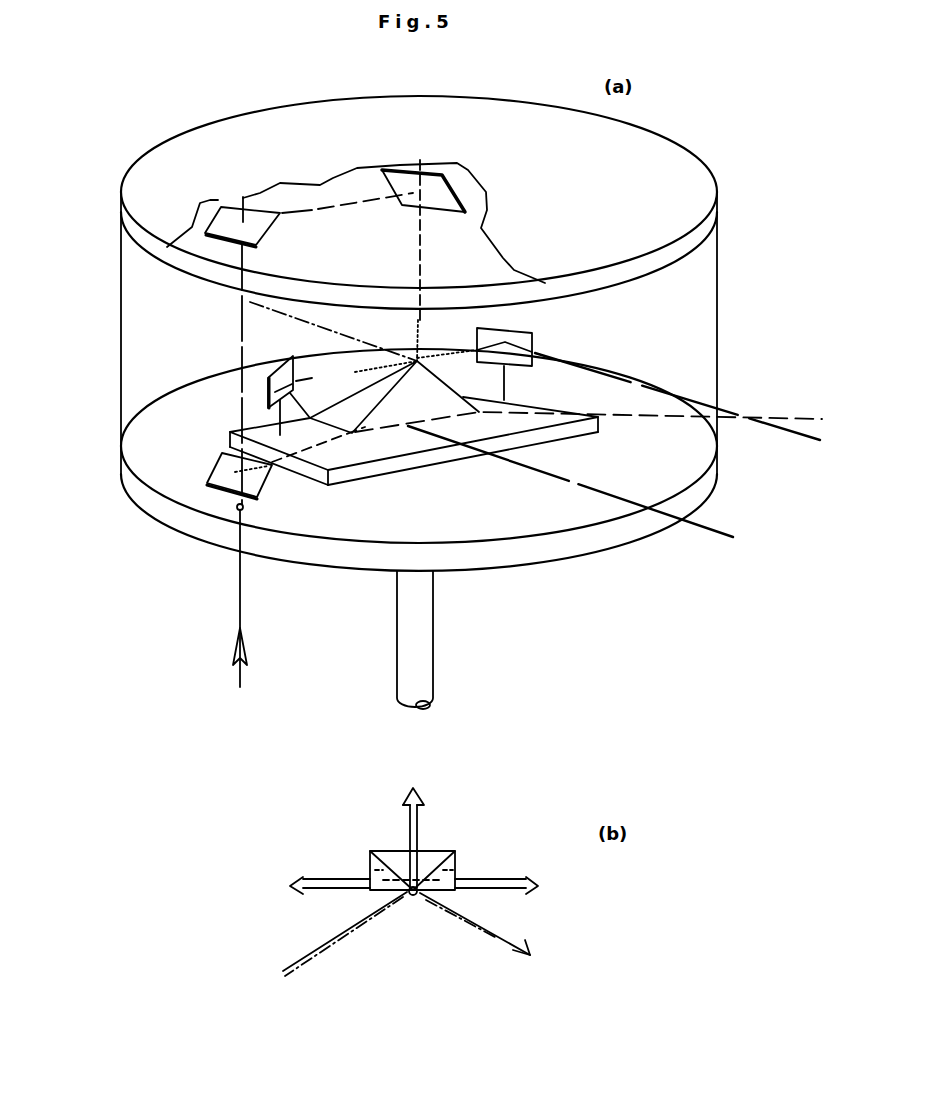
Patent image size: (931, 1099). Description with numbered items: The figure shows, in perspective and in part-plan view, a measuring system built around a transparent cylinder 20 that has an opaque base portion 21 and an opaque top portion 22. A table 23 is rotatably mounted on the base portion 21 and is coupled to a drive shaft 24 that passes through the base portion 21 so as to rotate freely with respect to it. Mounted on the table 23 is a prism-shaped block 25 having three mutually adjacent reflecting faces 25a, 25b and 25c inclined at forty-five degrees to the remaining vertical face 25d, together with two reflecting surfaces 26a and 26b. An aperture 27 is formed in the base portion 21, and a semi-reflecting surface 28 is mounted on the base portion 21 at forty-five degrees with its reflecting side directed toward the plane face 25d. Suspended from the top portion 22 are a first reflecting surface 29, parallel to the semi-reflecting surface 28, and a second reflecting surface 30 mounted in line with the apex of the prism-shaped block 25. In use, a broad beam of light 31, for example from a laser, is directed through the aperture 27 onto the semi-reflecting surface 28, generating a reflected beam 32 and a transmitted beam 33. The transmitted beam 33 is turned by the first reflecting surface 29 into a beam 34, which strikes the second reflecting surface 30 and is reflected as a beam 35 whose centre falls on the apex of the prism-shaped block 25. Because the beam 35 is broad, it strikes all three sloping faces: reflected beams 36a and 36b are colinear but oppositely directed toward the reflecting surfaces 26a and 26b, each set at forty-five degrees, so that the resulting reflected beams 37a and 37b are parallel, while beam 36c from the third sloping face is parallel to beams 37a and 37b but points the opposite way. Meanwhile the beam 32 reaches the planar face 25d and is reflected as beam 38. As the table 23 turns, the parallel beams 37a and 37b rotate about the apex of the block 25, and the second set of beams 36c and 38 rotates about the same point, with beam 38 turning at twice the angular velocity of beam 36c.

The transparent cylinder 20 is at (120, 337).
The base portion 21 is at (420, 532).
The top portion 22 is at (606, 206).
The table 23 is at (435, 460).
The drive shaft 24 is at (425, 633).
The prism-shaped block 25 is at (412, 638).
The reflecting face 25a is at (372, 394).
The reflecting face 25b is at (397, 858).
The reflecting face 25c is at (454, 870).
The vertical face 25d is at (432, 392).
The reflecting surface 26a is at (266, 380).
The reflecting surface 26b is at (534, 333).
The aperture 27 is at (236, 509).
The semi-reflecting surface 28 is at (223, 466).
The first reflecting surface 29 is at (232, 211).
The second reflecting surface 30 is at (447, 195).
The beam of light 31 is at (243, 612).
The reflected beam 32 is at (328, 440).
The transmitted beam 33 is at (240, 338).
The reflected beam 34 is at (328, 207).
The beam 35 is at (421, 268).
The reflected beam 36a is at (348, 372).
The reflected beam 36b is at (452, 348).
The beam 36c is at (300, 318).
The reflected beam 37a is at (684, 520).
The reflected beam 37b is at (766, 426).
The beam 38 is at (771, 418).